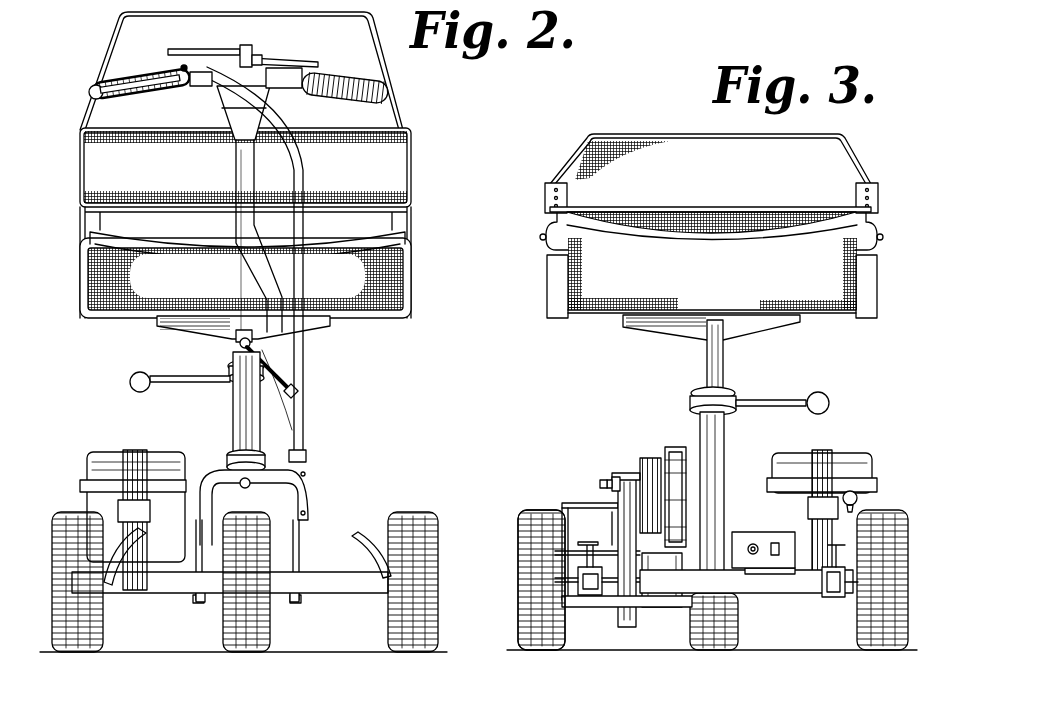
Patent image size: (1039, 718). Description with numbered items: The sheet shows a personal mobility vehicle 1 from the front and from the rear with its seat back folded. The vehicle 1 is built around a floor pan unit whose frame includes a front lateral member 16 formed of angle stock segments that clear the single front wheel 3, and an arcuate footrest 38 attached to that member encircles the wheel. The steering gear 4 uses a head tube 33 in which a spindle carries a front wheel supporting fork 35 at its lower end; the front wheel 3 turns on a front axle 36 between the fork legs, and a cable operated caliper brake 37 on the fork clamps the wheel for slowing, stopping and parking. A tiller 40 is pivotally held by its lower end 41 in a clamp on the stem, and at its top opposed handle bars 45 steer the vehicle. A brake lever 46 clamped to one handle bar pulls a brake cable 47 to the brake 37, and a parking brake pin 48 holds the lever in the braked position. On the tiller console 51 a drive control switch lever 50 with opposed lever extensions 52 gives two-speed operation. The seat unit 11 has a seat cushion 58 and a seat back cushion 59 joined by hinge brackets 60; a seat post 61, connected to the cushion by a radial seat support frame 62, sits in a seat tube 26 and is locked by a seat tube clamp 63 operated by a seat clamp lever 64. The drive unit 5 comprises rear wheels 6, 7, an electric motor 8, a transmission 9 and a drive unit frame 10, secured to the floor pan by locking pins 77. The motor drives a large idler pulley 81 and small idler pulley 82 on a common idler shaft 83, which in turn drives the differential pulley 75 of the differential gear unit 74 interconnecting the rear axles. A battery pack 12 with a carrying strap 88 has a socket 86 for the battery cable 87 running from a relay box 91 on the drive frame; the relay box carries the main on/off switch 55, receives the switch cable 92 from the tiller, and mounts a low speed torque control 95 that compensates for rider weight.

In FIG. 2, the personal mobility vehicle 1 is at (93, 45).
In FIG. 3, the personal mobility vehicle 1 is at (691, 126).
In FIG. 2, the front wheel 3 is at (272, 632).
In FIG. 2, the steering gear 4 is at (233, 184).
In FIG. 3, the drive unit 5 is at (538, 509).
In FIG. 2, the rear wheel 6 is at (418, 508).
In FIG. 3, the rear wheel 6 is at (519, 512).
In FIG. 2, the rear wheel 7 is at (70, 508).
In FIG. 3, the rear wheel 7 is at (862, 615).
In FIG. 3, the electric motor 8 is at (580, 503).
In FIG. 3, the transmission 9 is at (651, 456).
In FIG. 3, the drive unit frame 10 is at (753, 600).
In FIG. 3, the seat unit 11 is at (574, 143).
In FIG. 2, the battery pack 12 is at (98, 450).
In FIG. 3, the battery pack 12 is at (853, 453).
In FIG. 2, the front lateral member 16 is at (158, 590).
In FIG. 3, the seat tube 26 is at (726, 428).
In FIG. 2, the head tube 33 is at (233, 430).
In FIG. 2, the front wheel supporting fork 35 is at (301, 544).
In FIG. 2, the front axle 36 is at (205, 600).
In FIG. 2, the caliper brake 37 is at (300, 495).
In FIG. 2, the footrest 38 is at (122, 578).
In FIG. 2, the tiller 40 is at (236, 158).
In FIG. 2, the lower end 41 is at (228, 330).
In FIG. 2, the handle bars 45 is at (152, 94).
In FIG. 2, the brake lever 46 is at (147, 80).
In FIG. 2, the brake cable 47 is at (303, 157).
In FIG. 2, the parking brake pin 48 is at (200, 87).
In FIG. 2, the drive control switch lever 50 is at (245, 45).
In FIG. 2, the console 51 is at (262, 57).
In FIG. 2, the lever extensions 52 is at (200, 52).
In FIG. 3, the main on/off switch 55 is at (768, 590).
In FIG. 2, the seat cushion 58 is at (385, 280).
In FIG. 3, the seat cushion 58 is at (835, 283).
In FIG. 2, the seat back cushion 59 is at (392, 158).
In FIG. 3, the seat back cushion 59 is at (845, 156).
In FIG. 3, the hinge brackets 60 is at (546, 250).
In FIG. 3, the seat post 61 is at (724, 360).
In FIG. 2, the seat support frame 62 is at (323, 324).
In FIG. 3, the seat support frame 62 is at (670, 330).
In FIG. 2, the seat tube clamp 63 is at (228, 376).
In FIG. 3, the seat tube clamp 63 is at (698, 392).
In FIG. 2, the seat clamp lever 64 is at (191, 387).
In FIG. 3, the seat clamp lever 64 is at (797, 400).
In FIG. 3, the differential gear unit 74 is at (673, 607).
In FIG. 3, the differential pulley 75 is at (620, 626).
In FIG. 3, the locking pins 77 is at (605, 542).
In FIG. 3, the large idler pulley 81 is at (688, 450).
In FIG. 3, the small idler pulley 82 is at (616, 477).
In FIG. 3, the idler shaft 83 is at (604, 484).
In FIG. 3, the socket 86 is at (858, 497).
In FIG. 3, the battery cable 87 is at (808, 502).
In FIG. 2, the strap 88 is at (136, 450).
In FIG. 3, the strap 88 is at (818, 450).
In FIG. 3, the relay box 91 is at (755, 531).
In FIG. 2, the switch cable 92 is at (282, 354).
In FIG. 3, the low speed torque control 95 is at (758, 512).